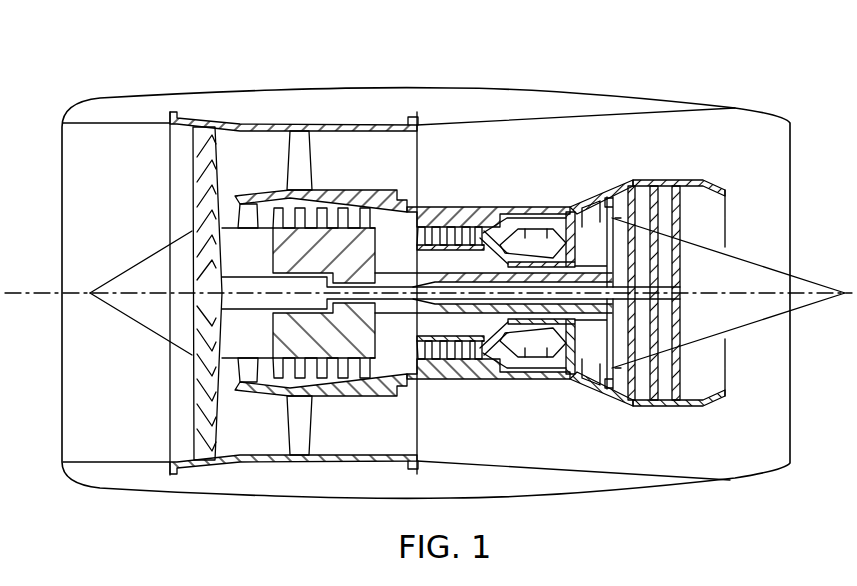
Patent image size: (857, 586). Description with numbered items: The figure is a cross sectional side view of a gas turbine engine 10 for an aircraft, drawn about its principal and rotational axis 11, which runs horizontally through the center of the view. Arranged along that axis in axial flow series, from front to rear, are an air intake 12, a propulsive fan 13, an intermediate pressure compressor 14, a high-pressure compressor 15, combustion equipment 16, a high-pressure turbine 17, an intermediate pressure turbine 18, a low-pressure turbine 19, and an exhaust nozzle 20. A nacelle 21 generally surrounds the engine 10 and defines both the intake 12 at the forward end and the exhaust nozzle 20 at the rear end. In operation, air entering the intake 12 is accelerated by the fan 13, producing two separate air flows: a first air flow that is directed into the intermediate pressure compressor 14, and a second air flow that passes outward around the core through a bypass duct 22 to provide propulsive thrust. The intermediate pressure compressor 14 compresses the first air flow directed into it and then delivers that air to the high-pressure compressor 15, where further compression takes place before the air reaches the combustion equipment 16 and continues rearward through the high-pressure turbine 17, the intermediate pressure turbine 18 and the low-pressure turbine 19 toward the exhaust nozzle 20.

The gas turbine engine 10 is at (50, 142).
The principal and rotational axis 11 is at (43, 293).
The air intake 12 is at (143, 125).
The propulsive fan 13 is at (193, 424).
The intermediate pressure compressor 14 is at (313, 345).
The high-pressure compressor 15 is at (447, 227).
The combustion equipment 16 is at (525, 362).
The high-pressure turbine 17 is at (567, 378).
The intermediate pressure turbine 18 is at (607, 200).
The low-pressure turbine 19 is at (630, 396).
The exhaust nozzle 20 is at (792, 437).
The nacelle 21 is at (465, 108).
The bypass duct 22 is at (386, 167).